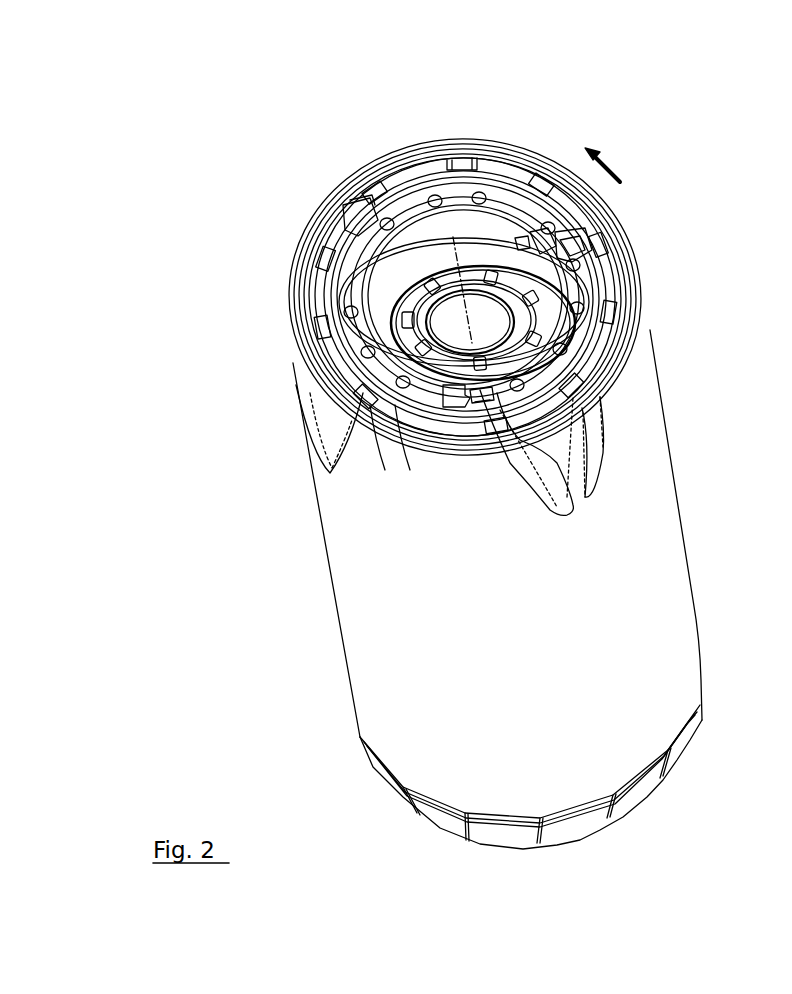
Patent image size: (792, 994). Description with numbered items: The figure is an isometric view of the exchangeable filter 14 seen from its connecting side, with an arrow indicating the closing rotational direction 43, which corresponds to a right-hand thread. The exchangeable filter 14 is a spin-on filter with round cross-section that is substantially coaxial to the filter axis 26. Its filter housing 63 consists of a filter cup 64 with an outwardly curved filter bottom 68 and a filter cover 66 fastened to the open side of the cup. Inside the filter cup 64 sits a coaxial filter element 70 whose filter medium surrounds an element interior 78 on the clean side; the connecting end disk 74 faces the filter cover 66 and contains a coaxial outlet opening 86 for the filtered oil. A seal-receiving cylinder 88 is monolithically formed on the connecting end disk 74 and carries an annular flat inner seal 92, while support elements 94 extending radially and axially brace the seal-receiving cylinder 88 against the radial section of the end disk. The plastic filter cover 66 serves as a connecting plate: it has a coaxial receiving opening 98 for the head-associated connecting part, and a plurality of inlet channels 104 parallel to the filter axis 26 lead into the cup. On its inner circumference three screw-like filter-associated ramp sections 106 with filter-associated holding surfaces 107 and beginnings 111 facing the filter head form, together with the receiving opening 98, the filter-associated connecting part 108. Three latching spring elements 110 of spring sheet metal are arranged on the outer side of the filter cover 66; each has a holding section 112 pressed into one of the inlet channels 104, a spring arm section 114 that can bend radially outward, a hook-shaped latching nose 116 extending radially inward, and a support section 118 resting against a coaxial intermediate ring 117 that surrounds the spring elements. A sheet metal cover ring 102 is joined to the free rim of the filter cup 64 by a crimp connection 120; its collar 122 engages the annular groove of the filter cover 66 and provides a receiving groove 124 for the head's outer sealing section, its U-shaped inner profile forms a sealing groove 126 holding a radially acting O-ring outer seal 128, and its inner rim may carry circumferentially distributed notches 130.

The exchangeable filter 14 is at (176, 92).
The filter axis 26 is at (370, 392).
The closing rotational direction 43 is at (613, 167).
The filter housing 63 is at (362, 633).
The filter cup 64 is at (372, 700).
The filter cover 66 is at (499, 190).
The filter bottom 68 is at (648, 788).
The filter element 70 is at (397, 232).
The connecting end disk 74 is at (392, 295).
The element interior 78 is at (481, 305).
The outlet opening 86 is at (422, 252).
The seal-receiving cylinder 88 is at (402, 282).
The inner seal 92 is at (420, 338).
The support elements 94 is at (545, 296).
The receiving opening 98 is at (412, 328).
The sheet metal cover ring 102 is at (380, 176).
The inlet channels 104 is at (352, 413).
The filter-associated ramp sections 106 is at (350, 218).
The filter-associated holding surfaces 107 is at (455, 300).
The filter-associated connecting part 108 is at (545, 235).
The latching spring elements 110 is at (490, 402).
The beginnings 111 is at (522, 243).
The holding section 112 is at (453, 395).
The spring arm section 114 is at (480, 392).
The latching nose 116 is at (582, 408).
The intermediate ring 117 is at (583, 320).
The support sections 118 is at (573, 500).
The crimp connection 120 is at (300, 245).
The collar 122 is at (623, 263).
The receiving groove 124 is at (617, 290).
The sealing groove 126 is at (405, 405).
The outer seal 128 is at (385, 400).
The notches 130 is at (353, 222).